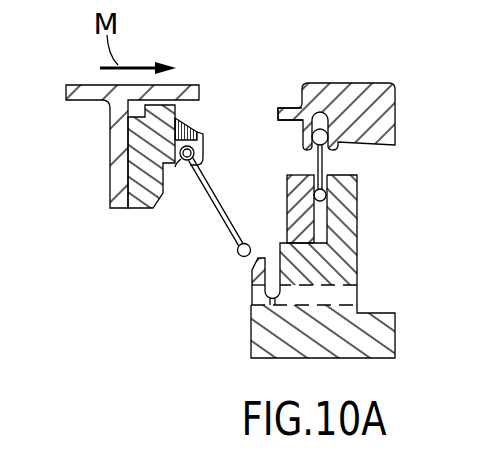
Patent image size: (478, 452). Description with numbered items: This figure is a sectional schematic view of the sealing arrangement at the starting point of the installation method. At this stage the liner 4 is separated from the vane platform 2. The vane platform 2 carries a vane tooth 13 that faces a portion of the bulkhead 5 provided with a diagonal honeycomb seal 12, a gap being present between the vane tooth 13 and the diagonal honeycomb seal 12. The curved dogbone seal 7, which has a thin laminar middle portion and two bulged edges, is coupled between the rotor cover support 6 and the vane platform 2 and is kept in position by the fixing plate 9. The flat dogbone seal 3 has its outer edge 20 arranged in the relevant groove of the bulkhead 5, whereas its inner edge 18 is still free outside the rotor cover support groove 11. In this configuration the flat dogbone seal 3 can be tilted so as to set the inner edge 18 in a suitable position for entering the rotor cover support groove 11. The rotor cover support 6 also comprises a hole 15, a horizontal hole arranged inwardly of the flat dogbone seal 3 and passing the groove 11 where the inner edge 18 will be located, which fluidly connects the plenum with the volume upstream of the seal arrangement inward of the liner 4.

The vane platform 2 is at (372, 90).
The flat dogbone seal 3 is at (220, 202).
The liner 4 is at (78, 88).
The bulkhead 5 is at (136, 158).
The rotor cover support 6 is at (386, 344).
The curved dogbone seal 7 is at (323, 162).
The fixing plate 9 is at (300, 208).
The rotor cover support groove 11 is at (275, 300).
The diagonal honeycomb seal 12 is at (187, 133).
The vane tooth 13 is at (283, 113).
The hole 15 is at (357, 286).
The inner edge 18 is at (243, 258).
The outer edge 20 is at (182, 160).